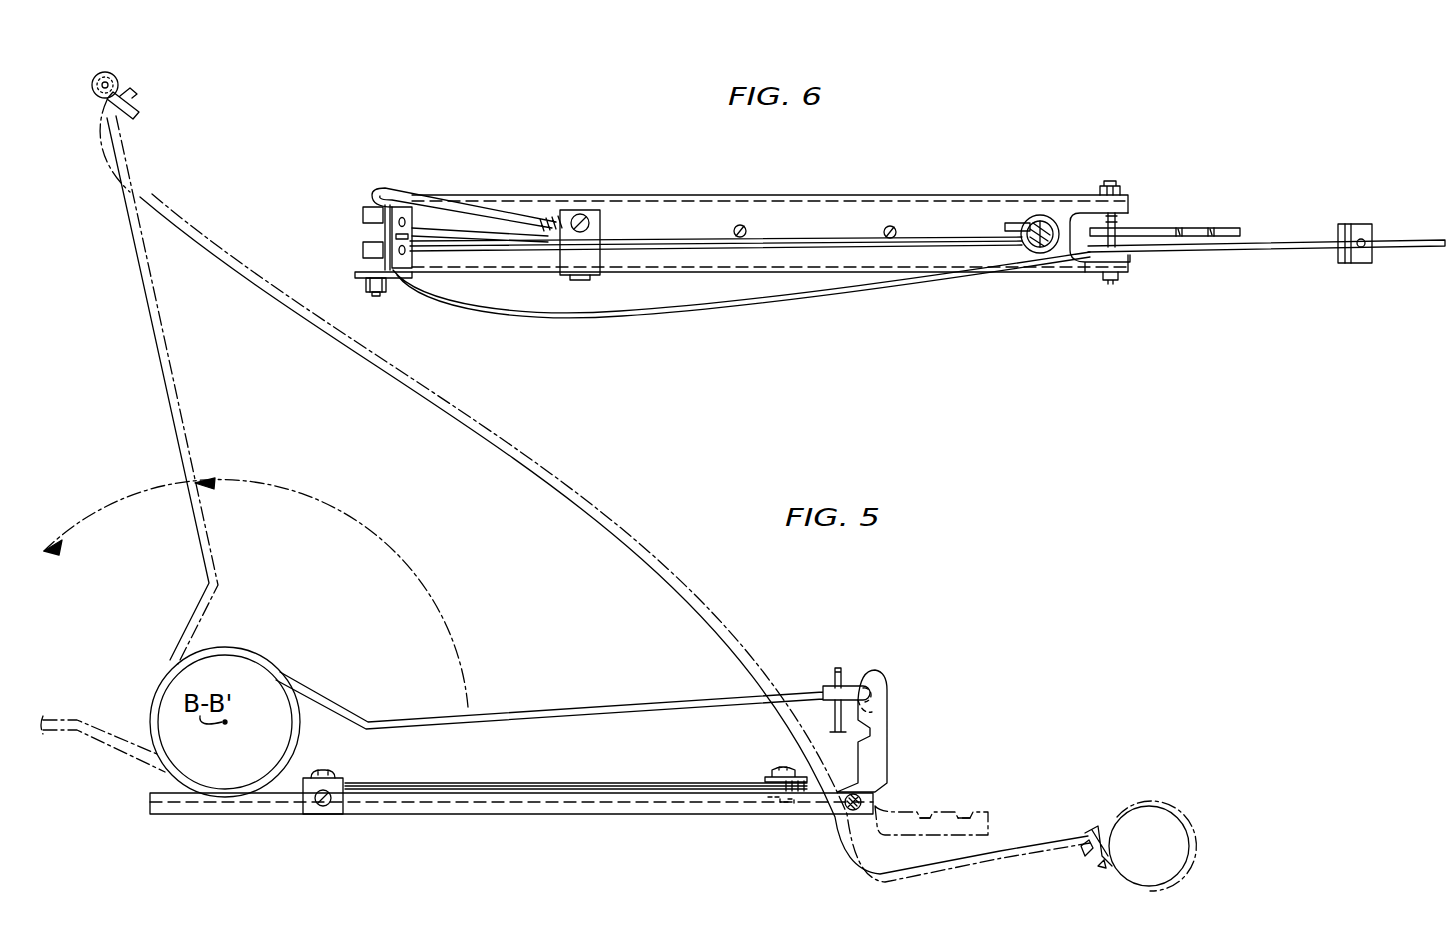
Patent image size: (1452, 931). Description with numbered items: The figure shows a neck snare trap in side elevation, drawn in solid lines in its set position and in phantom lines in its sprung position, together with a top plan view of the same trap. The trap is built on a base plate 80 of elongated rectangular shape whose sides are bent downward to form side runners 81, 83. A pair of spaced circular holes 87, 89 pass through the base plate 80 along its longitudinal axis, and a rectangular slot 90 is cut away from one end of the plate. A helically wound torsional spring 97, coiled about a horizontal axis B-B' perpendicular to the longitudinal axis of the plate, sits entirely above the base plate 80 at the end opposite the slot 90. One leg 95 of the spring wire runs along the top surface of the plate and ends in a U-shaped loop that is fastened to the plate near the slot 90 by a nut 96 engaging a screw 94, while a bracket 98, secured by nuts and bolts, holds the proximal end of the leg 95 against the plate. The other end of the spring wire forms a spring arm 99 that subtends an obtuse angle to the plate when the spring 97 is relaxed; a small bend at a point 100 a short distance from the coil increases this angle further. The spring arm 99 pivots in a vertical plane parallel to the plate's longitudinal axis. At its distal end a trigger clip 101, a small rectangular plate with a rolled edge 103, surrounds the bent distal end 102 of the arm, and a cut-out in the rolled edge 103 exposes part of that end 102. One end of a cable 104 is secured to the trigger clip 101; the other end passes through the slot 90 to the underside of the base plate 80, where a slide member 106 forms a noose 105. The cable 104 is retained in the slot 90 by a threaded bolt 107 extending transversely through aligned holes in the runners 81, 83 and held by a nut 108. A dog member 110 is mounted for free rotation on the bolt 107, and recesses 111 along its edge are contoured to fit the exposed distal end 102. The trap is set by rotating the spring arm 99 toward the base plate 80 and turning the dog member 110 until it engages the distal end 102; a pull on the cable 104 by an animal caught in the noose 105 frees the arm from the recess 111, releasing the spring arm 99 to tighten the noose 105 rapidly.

In FIG. 6, the base plate 80 is at (725, 208).
In FIG. 6, the side runner 81 is at (875, 205).
In FIG. 6, the side runner 83 is at (698, 266).
In FIG. 5, the side runner 83 is at (560, 800).
In FIG. 6, the circular hole 87 is at (748, 231).
In FIG. 6, the circular hole 89 is at (883, 232).
In FIG. 6, the rectangular slot 90 is at (1082, 214).
In FIG. 6, the screw 94 is at (1038, 213).
In FIG. 5, the screw 94 is at (786, 778).
In FIG. 6, the spring leg 95 is at (700, 246).
In FIG. 5, the spring leg 95 is at (508, 789).
In FIG. 6, the nut 96 is at (1042, 262).
In FIG. 5, the nut 96 is at (778, 806).
In FIG. 5, the torsional spring 97 is at (292, 724).
In FIG. 6, the bracket 98 is at (600, 216).
In FIG. 5, the bracket 98 is at (334, 786).
In FIG. 6, the spring arm 99 is at (470, 212).
In FIG. 5, the spring arm 99 is at (147, 288).
In FIG. 5, the bend point 100 is at (212, 583).
In FIG. 6, the trigger clip 101 is at (406, 214).
In FIG. 5, the trigger clip 101 is at (140, 107).
In FIG. 6, the bent distal end 102 is at (380, 293).
In FIG. 5, the bent distal end 102 is at (86, 73).
In FIG. 6, the rolled edge 103 is at (362, 218).
In FIG. 6, the cable 104 is at (620, 320).
In FIG. 5, the cable 104 is at (565, 484).
In FIG. 6, the noose 105 is at (1405, 240).
In FIG. 5, the noose 105 is at (1172, 824).
In FIG. 6, the slide member 106 is at (1358, 224).
In FIG. 5, the slide member 106 is at (1106, 842).
In FIG. 6, the threaded bolt 107 is at (1122, 216).
In FIG. 6, the nut 108 is at (1100, 183).
In FIG. 6, the dog member 110 is at (1205, 228).
In FIG. 5, the dog member 110 is at (945, 812).
In FIG. 6, the recess 111 is at (1183, 228).
In FIG. 5, the recess 111 is at (925, 812).